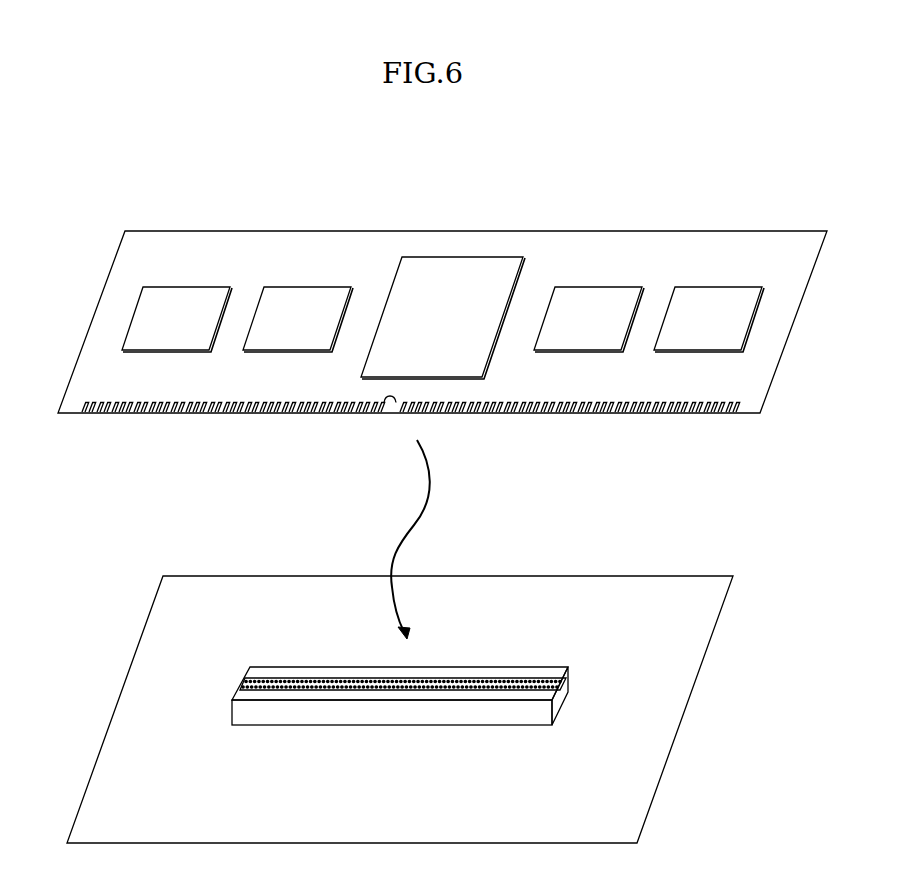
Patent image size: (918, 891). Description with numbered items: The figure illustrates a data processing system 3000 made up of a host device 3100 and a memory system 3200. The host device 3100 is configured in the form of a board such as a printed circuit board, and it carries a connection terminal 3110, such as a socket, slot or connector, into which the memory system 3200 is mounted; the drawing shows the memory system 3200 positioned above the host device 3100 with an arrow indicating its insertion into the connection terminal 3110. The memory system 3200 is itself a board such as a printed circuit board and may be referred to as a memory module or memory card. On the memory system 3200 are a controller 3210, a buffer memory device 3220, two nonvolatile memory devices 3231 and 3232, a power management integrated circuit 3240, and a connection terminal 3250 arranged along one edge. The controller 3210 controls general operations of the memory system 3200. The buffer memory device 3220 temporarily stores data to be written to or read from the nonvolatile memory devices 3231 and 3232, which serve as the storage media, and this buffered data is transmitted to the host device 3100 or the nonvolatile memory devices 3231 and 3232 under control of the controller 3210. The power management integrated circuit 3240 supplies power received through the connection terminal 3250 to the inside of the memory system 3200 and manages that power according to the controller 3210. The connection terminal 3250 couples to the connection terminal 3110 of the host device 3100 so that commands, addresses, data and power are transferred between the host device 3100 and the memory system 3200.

The data processing system 3000 is at (100, 187).
The host device 3100 is at (400, 709).
The connection terminal 3110 is at (567, 687).
The memory system 3200 is at (442, 347).
The controller 3210 is at (443, 318).
The buffer memory device 3220 is at (298, 319).
The nonvolatile memory device 3231 is at (589, 319).
The nonvolatile memory device 3232 is at (709, 319).
The power management integrated circuit 3240 is at (177, 319).
The connection terminal 3250 is at (108, 413).